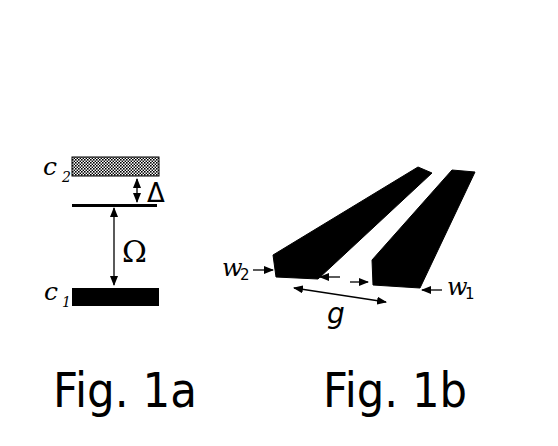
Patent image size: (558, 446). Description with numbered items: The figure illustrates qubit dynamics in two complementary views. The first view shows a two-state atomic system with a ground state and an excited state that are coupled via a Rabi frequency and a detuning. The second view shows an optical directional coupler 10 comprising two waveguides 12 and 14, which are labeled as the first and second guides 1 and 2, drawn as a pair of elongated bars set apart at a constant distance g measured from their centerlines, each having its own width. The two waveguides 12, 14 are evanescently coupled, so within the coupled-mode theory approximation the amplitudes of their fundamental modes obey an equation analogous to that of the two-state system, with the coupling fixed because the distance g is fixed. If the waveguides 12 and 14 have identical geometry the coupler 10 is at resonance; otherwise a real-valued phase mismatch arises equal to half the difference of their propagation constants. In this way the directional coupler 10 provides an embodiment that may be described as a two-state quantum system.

The optical directional coupler 10 is at (396, 178).
The waveguide 12 is at (352, 203).
The waveguide 14 is at (446, 196).
The waveguide 1 is at (352, 238).
The waveguide 2 is at (423, 248).